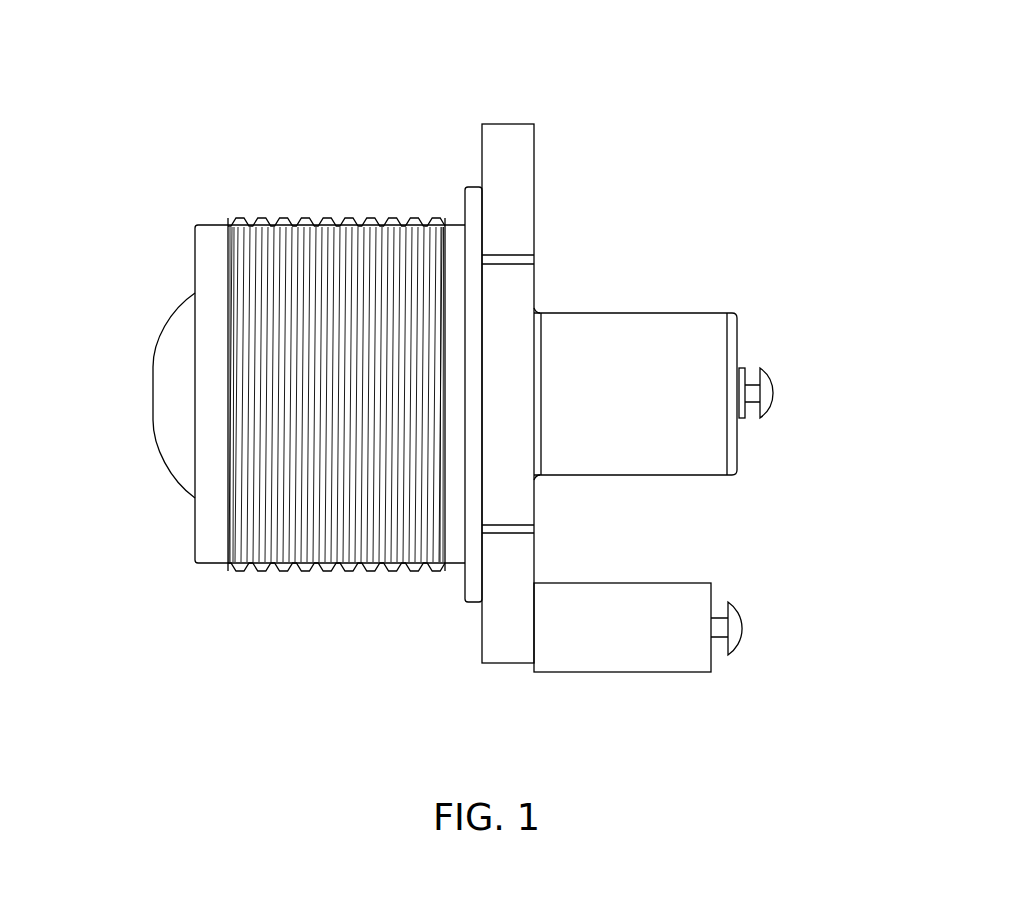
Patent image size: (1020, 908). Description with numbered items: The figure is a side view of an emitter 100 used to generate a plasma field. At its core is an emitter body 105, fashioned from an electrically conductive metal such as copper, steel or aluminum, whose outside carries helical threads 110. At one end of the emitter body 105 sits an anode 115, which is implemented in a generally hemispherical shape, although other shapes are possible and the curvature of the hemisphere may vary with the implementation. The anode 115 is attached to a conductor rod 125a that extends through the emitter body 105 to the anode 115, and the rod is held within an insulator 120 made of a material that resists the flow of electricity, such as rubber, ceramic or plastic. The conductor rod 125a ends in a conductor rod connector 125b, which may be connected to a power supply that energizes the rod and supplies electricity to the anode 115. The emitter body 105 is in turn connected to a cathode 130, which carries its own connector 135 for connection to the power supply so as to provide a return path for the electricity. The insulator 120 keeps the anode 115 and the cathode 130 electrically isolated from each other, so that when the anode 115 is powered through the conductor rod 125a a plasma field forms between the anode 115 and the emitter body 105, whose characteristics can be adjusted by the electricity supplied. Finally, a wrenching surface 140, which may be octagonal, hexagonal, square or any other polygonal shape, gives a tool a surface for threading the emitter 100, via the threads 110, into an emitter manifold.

The emitter 100 is at (98, 53).
The emitter body 105 is at (255, 207).
The threads 110 is at (348, 213).
The anode 115 is at (152, 382).
The insulator 120 is at (670, 312).
The conductor rod 125a is at (750, 383).
The conductor rod connector 125b is at (773, 389).
The cathode 130 is at (672, 673).
The connector 135 is at (742, 625).
The wrenching surface 140 is at (525, 123).